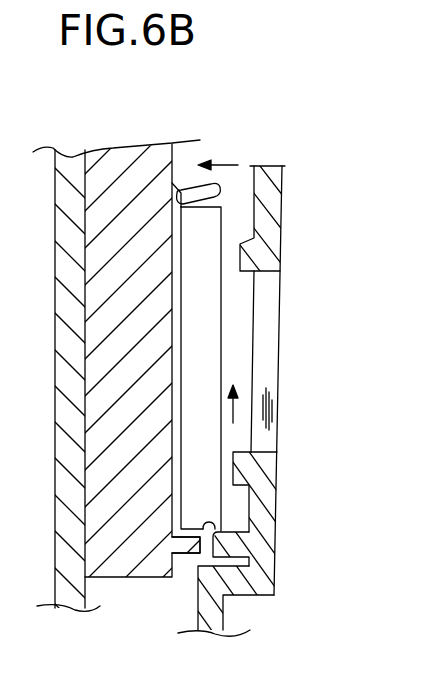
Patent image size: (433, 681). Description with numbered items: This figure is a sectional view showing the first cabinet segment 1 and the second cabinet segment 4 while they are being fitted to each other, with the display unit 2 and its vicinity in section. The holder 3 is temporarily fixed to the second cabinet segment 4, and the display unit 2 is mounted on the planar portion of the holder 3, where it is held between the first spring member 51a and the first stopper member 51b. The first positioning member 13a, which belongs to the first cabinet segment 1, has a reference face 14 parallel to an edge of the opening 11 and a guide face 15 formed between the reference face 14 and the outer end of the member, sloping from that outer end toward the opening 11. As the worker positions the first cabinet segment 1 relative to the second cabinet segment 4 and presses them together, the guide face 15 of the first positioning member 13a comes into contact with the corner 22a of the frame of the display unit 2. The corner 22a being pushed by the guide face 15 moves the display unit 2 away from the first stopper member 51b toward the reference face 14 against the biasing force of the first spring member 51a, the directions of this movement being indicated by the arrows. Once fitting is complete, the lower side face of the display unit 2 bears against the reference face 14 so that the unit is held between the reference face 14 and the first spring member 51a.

The first cabinet segment 1 is at (266, 386).
The display unit 2 is at (165, 387).
The holder 3 is at (120, 167).
The second cabinet segment 4 is at (73, 158).
The opening 11 is at (268, 315).
The first positioning member 13a is at (255, 596).
The reference face 14 is at (223, 531).
The guide face 15 is at (226, 524).
The corner of the frame 22a is at (197, 540).
The first spring member 51a is at (190, 189).
The first stopper member 51b is at (191, 545).